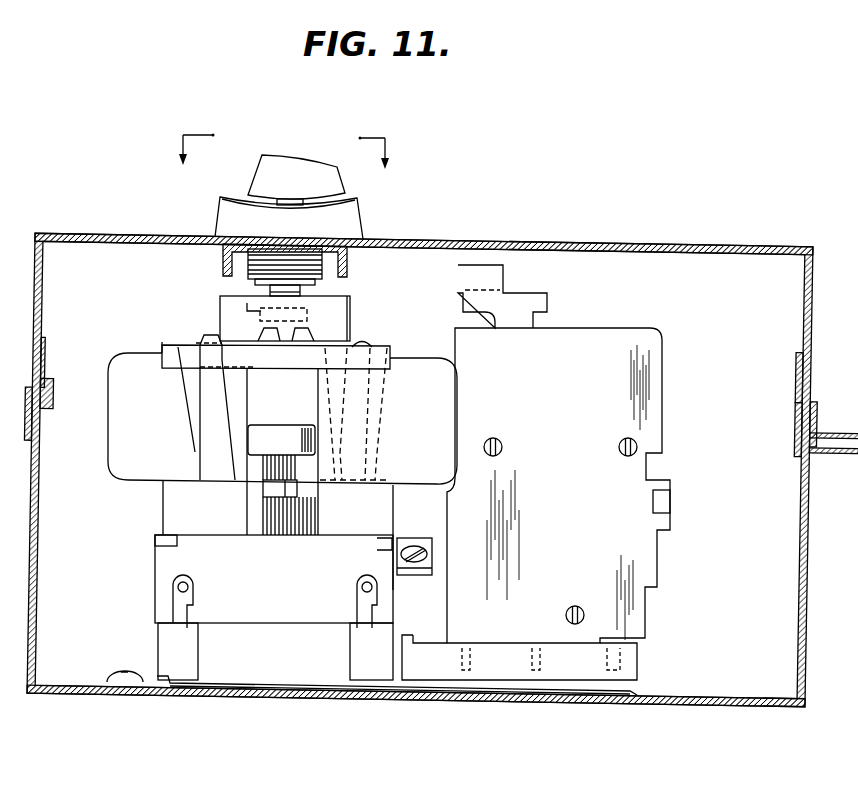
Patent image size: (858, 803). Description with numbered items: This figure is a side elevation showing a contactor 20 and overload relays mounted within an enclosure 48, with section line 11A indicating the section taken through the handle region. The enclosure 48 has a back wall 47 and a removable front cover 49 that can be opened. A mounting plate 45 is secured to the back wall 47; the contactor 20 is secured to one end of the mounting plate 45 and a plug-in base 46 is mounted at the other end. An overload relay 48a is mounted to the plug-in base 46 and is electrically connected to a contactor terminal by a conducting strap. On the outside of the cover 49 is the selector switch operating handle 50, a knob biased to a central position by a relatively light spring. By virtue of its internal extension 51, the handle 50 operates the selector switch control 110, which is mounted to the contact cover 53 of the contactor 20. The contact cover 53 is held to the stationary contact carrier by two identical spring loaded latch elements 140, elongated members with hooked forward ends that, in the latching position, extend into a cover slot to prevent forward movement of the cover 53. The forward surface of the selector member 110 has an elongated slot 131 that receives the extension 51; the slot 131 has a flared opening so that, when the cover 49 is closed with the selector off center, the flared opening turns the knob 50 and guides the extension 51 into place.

The enclosure 48 is at (805, 240).
The removable front cover 49 is at (747, 224).
The back wall 47 is at (673, 702).
The overload relay 48a is at (638, 313).
The selector switch operating handle 50 is at (316, 161).
The section line 11A- 11A is at (287, 162).
The internal extension 51 is at (301, 296).
The selector switch control 110 is at (220, 314).
The elongated slot 131 is at (250, 297).
The contact cover 53 is at (384, 345).
The contactor 20 is at (415, 352).
The spring loaded latch element 140 is at (197, 378).
The mounting plate 45 is at (247, 682).
The plug-in base 46 is at (640, 653).